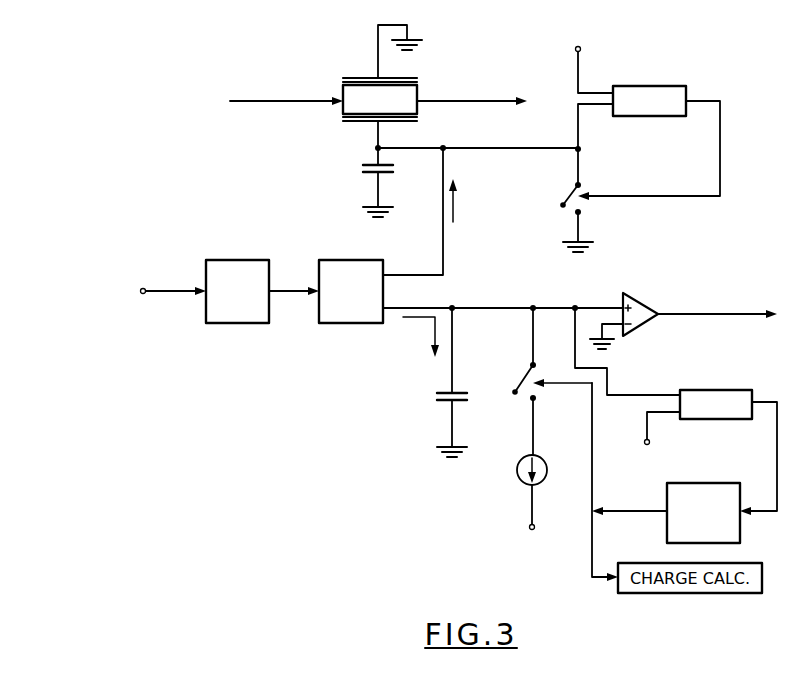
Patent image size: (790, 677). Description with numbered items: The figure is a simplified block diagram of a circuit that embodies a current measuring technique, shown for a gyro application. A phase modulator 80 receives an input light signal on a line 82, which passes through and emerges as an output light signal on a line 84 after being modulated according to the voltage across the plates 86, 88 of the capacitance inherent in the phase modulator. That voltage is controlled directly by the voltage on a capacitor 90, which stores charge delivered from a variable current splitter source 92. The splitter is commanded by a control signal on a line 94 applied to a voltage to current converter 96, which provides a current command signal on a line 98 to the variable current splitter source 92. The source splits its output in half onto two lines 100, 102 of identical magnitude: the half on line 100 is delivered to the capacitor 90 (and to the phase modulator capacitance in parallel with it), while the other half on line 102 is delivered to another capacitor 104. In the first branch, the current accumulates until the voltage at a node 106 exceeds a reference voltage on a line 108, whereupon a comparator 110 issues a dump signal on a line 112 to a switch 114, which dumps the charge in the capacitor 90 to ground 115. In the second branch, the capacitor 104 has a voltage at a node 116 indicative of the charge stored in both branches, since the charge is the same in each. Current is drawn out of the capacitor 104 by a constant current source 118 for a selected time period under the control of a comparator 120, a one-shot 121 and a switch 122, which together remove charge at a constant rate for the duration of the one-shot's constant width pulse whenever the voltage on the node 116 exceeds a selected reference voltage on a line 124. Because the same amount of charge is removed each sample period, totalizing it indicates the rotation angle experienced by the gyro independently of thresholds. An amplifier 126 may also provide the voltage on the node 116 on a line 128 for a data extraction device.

The phase modulator 80 is at (341, 109).
The line 82 is at (250, 100).
The line 84 is at (465, 100).
The plate 86 is at (402, 78).
The plate 88 is at (410, 121).
The capacitor 90 is at (364, 163).
The variable current splitter source 92 is at (349, 324).
The line 94 is at (150, 290).
The voltage to current converter 96 is at (220, 260).
The line 98 is at (290, 297).
The line 100 is at (443, 258).
The line 102 is at (408, 307).
The capacitor 104 is at (437, 386).
The node 106 is at (447, 152).
The line 108 is at (578, 70).
The comparator 110 is at (660, 86).
The line 112 is at (720, 160).
The switch 114 is at (575, 185).
The ground 115 is at (586, 239).
The node 116 is at (456, 306).
The constant current source 118 is at (517, 470).
The comparator 120 is at (705, 390).
The one-shot 121 is at (705, 483).
The switch 122 is at (526, 376).
The line 124 is at (652, 430).
The amplifier 126 is at (645, 303).
The line 128 is at (702, 314).